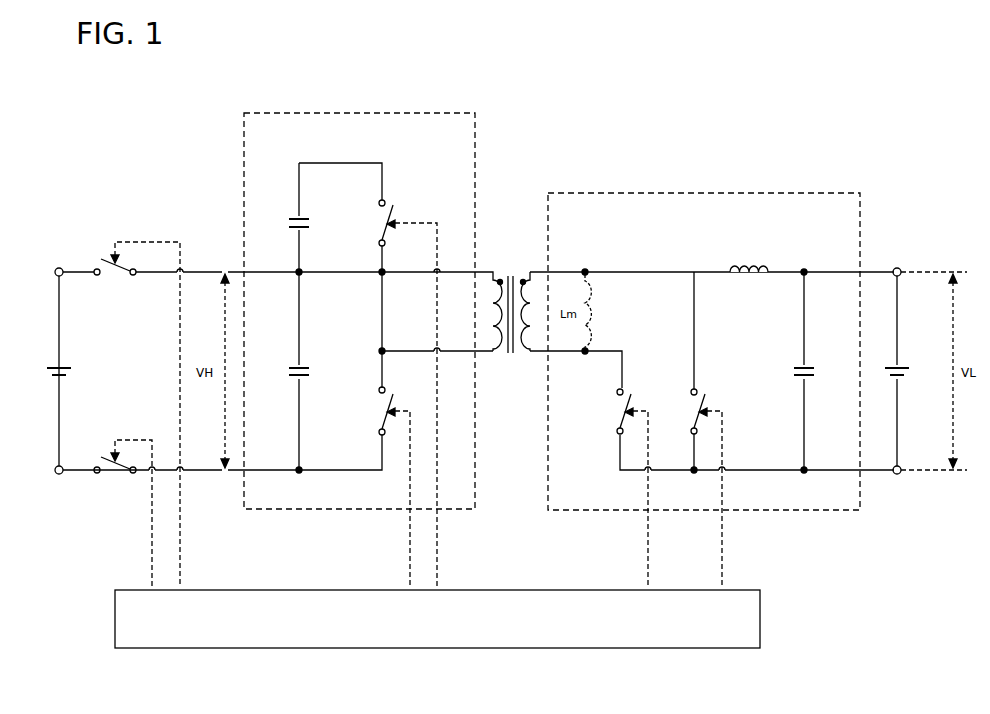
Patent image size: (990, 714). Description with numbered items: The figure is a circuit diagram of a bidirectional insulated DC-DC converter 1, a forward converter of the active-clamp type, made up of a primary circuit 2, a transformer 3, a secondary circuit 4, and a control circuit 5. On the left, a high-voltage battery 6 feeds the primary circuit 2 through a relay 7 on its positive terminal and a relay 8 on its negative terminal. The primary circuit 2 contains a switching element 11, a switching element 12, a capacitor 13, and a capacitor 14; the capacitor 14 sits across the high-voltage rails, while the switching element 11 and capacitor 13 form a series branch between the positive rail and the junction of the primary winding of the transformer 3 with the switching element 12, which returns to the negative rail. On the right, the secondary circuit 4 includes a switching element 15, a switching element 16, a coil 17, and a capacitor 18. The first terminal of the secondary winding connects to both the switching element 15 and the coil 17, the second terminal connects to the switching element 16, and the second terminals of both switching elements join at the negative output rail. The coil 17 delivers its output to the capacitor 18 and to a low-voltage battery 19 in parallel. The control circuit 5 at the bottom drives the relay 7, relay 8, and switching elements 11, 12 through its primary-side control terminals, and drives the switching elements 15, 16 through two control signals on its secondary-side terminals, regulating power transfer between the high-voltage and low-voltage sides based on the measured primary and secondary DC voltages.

The bidirectional insulated DC-DC converter 1 is at (547, 153).
The primary circuit 2 is at (358, 112).
The transformer 3 is at (512, 263).
The secondary circuit 4 is at (705, 193).
The control circuit 5 is at (512, 588).
The high-voltage battery 6 is at (64, 368).
The relay 7 is at (114, 278).
The relay 8 is at (114, 478).
The switching element 11 is at (377, 223).
The switching element 12 is at (377, 410).
The capacitor 13 is at (293, 217).
The capacitor 14 is at (293, 366).
The switching element 15 is at (691, 410).
The switching element 16 is at (617, 410).
The coil 17 is at (748, 276).
The capacitor 18 is at (809, 369).
The low-voltage battery 19 is at (902, 369).